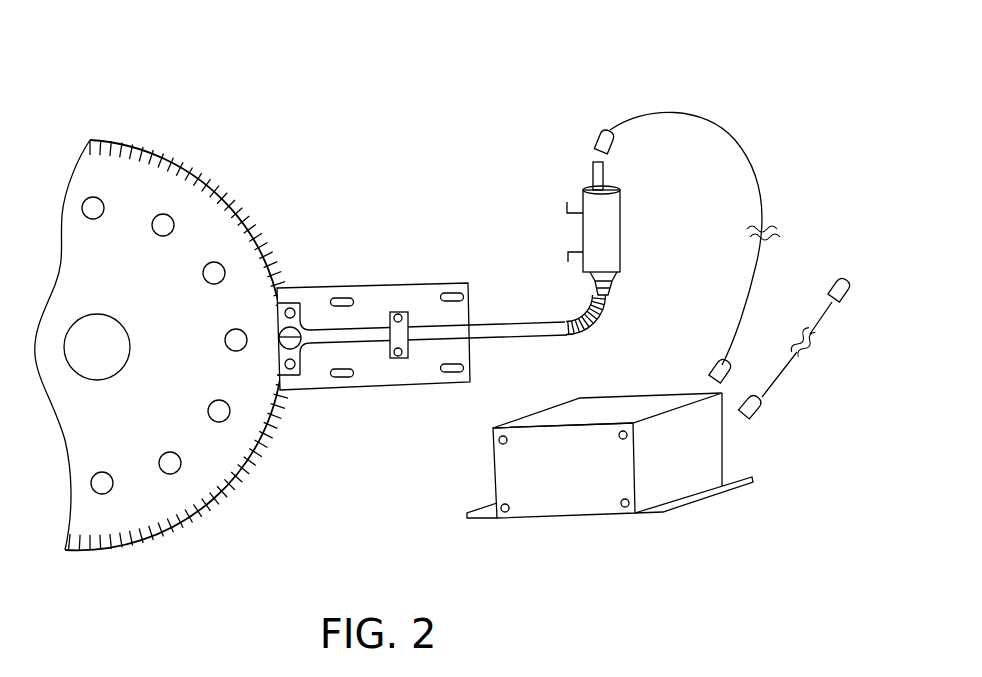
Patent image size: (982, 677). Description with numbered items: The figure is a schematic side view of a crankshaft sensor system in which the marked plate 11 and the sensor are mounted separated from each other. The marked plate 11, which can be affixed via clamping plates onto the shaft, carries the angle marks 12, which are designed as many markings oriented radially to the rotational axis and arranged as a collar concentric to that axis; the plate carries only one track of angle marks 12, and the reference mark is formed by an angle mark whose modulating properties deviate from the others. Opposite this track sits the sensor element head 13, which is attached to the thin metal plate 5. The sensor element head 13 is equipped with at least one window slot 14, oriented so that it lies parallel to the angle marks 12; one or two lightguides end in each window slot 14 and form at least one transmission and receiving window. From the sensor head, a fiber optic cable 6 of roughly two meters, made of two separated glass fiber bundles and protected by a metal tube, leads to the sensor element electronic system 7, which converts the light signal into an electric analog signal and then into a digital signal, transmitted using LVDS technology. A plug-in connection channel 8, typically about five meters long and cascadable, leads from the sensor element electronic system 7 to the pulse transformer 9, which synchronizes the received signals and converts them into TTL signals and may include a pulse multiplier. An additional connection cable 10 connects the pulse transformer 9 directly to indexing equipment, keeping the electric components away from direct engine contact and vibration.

The thin metal plate 5 is at (366, 366).
The fiber optic cable 6 is at (597, 325).
The sensor element electronic system 7 is at (597, 228).
The connection channel 8 is at (727, 127).
The pulse transformer 9 is at (582, 470).
The connection cable 10 is at (785, 377).
The marked plate 11 is at (175, 268).
The angle marks 12 is at (153, 147).
The sensor element head 13 is at (293, 332).
The window slot 14 is at (300, 382).